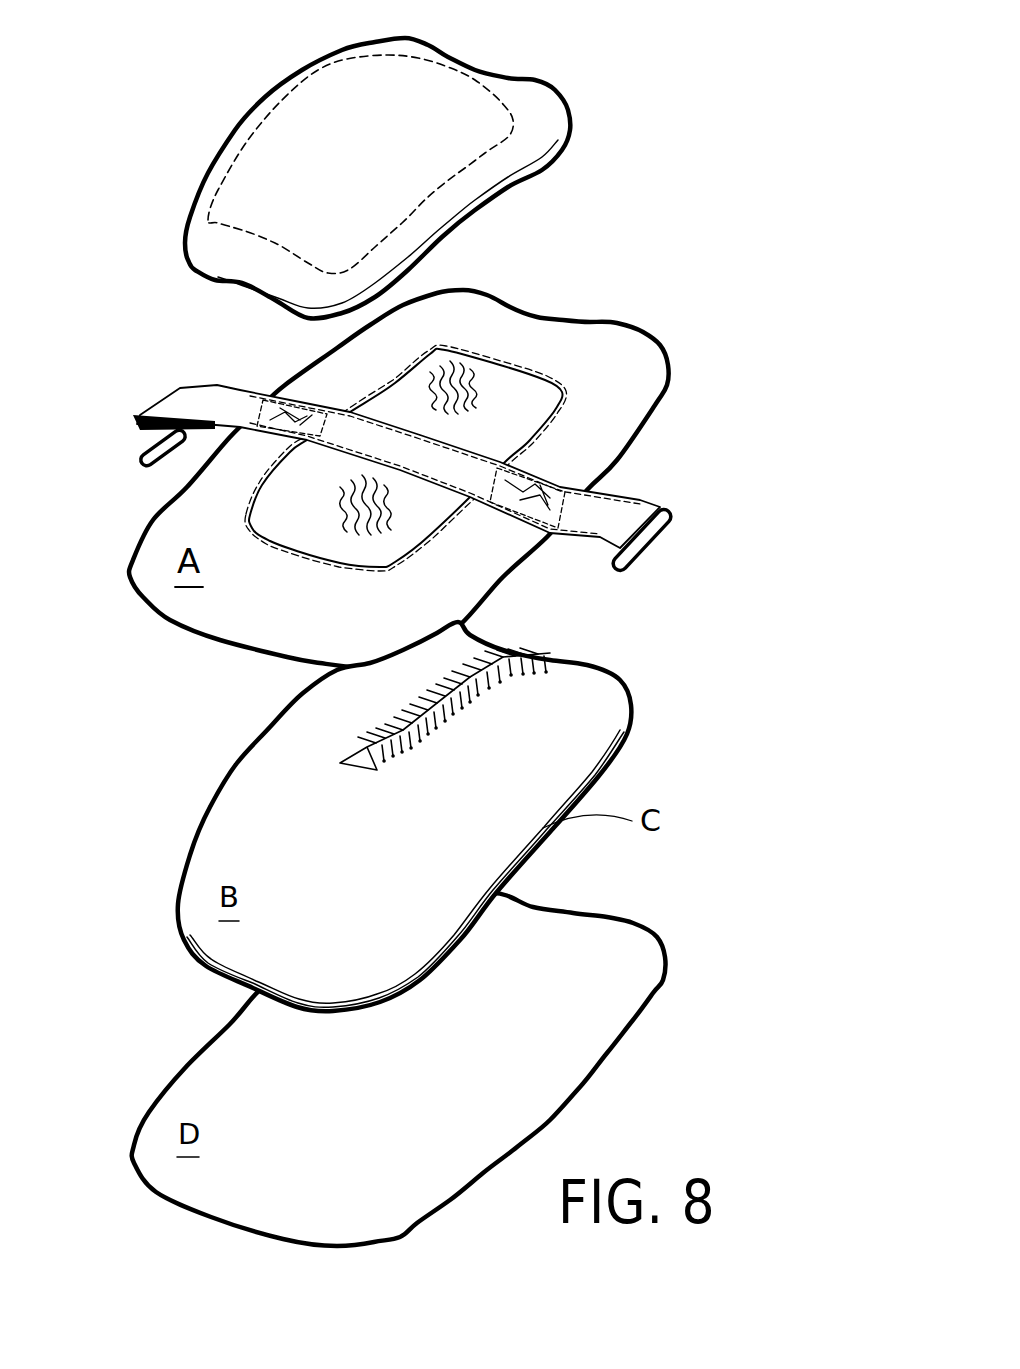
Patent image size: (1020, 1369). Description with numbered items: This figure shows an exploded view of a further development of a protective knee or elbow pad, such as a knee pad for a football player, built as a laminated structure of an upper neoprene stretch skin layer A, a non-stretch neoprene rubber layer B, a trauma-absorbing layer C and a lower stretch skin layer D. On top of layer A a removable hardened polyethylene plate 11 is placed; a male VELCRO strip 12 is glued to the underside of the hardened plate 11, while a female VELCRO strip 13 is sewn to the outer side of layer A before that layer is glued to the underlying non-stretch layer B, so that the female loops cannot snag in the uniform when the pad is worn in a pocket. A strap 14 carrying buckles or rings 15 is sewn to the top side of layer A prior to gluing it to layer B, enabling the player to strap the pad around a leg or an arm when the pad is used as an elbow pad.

The hardened polyethylene plate 11 is at (468, 210).
The male VELCRO strip 12 is at (508, 110).
The female VELCRO strip 13 is at (540, 375).
The strap 14 is at (210, 392).
The buckle or ring 15 is at (133, 457).